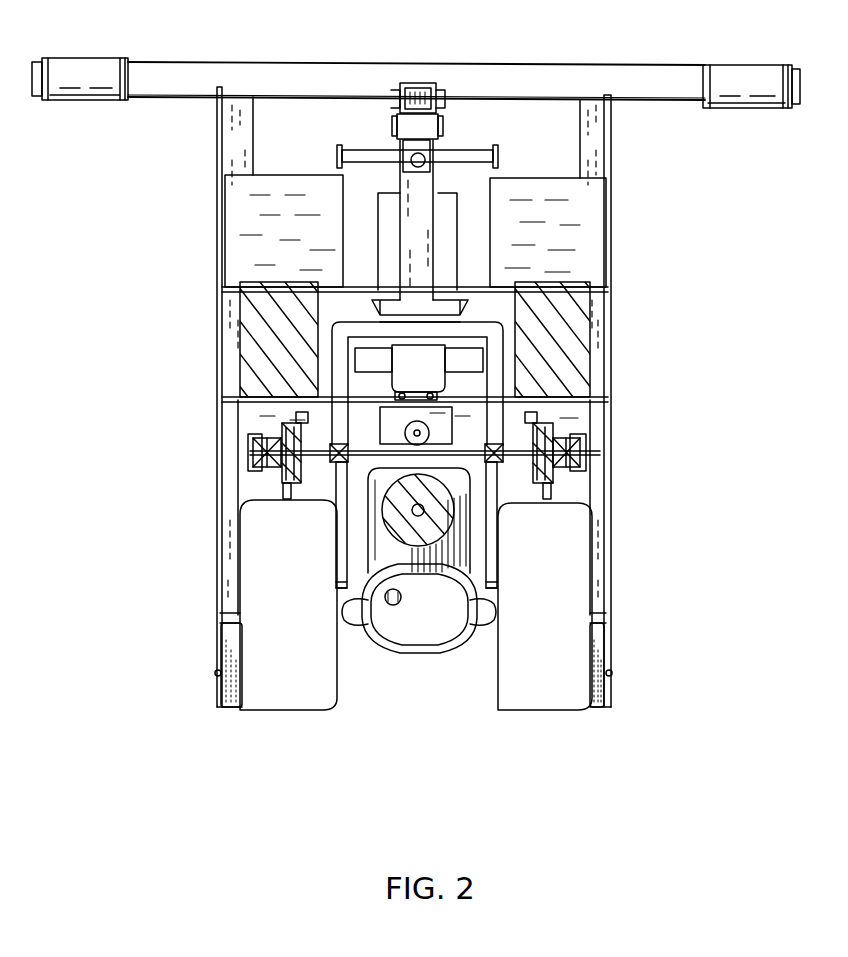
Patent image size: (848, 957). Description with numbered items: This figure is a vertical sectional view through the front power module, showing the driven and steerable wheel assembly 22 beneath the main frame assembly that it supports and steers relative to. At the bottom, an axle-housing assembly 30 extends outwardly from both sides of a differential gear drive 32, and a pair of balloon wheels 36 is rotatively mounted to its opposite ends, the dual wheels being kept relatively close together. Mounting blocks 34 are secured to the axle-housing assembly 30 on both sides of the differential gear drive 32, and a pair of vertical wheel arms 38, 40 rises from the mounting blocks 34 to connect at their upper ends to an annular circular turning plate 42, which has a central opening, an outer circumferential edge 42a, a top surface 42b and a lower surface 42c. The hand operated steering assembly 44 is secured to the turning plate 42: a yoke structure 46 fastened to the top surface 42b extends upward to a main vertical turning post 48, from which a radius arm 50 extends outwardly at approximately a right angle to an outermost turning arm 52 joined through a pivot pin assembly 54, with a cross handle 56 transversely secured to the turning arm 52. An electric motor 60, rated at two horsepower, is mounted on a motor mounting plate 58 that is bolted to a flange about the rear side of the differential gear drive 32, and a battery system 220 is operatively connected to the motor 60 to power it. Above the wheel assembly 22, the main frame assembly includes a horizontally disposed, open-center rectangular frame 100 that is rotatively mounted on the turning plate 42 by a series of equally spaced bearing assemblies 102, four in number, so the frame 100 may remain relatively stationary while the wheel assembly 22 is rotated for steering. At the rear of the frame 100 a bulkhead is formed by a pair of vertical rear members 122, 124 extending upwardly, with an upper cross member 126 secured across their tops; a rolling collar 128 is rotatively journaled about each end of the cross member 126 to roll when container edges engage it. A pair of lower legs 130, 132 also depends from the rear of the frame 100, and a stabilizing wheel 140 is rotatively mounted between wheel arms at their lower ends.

The driven and steerable wheel assembly 22 is at (181, 455).
The axle-housing assembly 30 is at (348, 617).
The differential gear drive 32 is at (427, 632).
The mounting blocks 34 is at (342, 600).
The balloon wheels 36 is at (270, 686).
The vertical wheel arm 38 is at (336, 496).
The vertical wheel arm 40 is at (497, 535).
The circular turning plate 42 is at (345, 436).
The outer circumferential edge 42a is at (587, 447).
The top surface 42b is at (523, 413).
The lower surface 42c is at (547, 385).
The hand operated turning or steering assembly 44 is at (343, 195).
The yoke structure 46 is at (342, 382).
The main vertical turning post 48 is at (413, 237).
The radius arm 50 is at (418, 85).
The outermost turning arm 52 is at (415, 127).
The pivot pin assembly 54 is at (445, 92).
The cross handle 56 is at (363, 155).
The motor mounting plate 58 is at (385, 553).
The electric motor 60 is at (397, 518).
The rectangular frame 100 is at (275, 403).
The bearing assembly 102 is at (260, 480).
The vertical rear member 122 is at (611, 133).
The vertical rear member 124 is at (230, 125).
The upper cross member 126 is at (538, 77).
The rolling collar 128 is at (87, 67).
The lower leg 130 is at (595, 582).
The lower leg 132 is at (230, 587).
The stabilizing wheel 140 is at (230, 652).
The battery system 220 is at (252, 293).